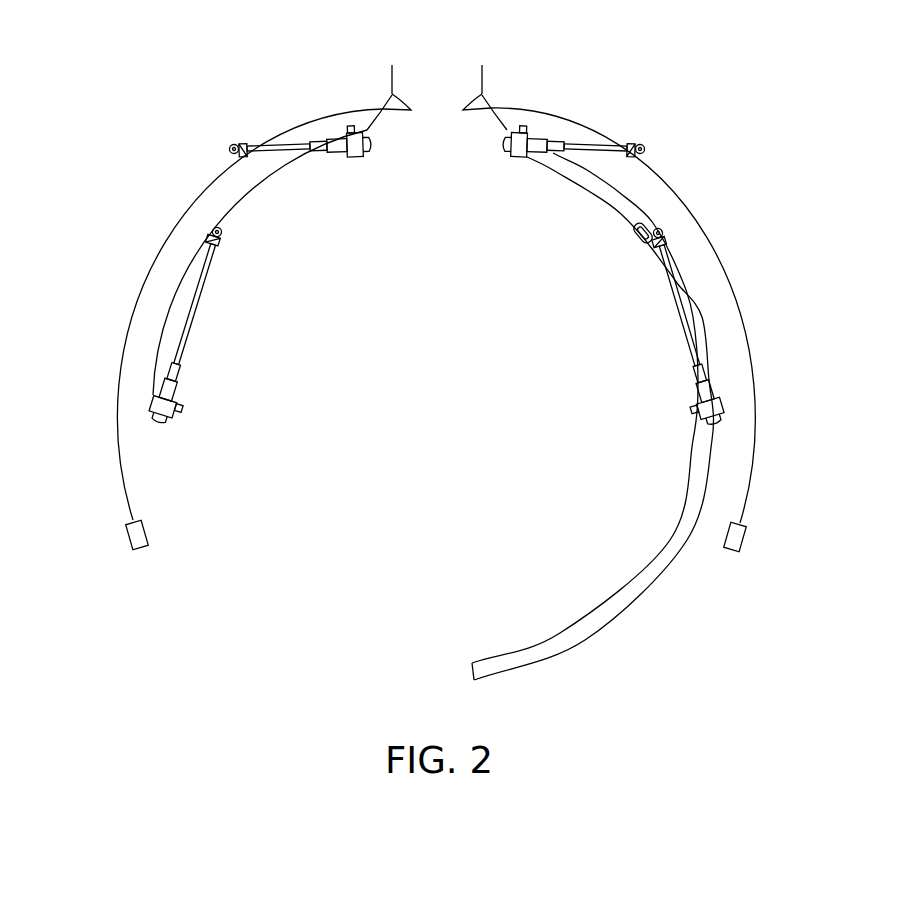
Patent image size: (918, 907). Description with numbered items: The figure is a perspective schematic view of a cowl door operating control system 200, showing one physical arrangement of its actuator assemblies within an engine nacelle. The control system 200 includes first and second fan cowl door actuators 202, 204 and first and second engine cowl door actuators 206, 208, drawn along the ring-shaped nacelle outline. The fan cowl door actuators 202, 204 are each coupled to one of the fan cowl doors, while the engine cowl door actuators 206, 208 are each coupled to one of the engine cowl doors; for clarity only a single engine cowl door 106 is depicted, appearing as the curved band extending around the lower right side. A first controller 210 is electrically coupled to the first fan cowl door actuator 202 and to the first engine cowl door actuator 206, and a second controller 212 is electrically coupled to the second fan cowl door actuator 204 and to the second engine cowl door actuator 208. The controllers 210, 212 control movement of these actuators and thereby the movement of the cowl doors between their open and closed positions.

The cowl door operating control system 200 is at (144, 118).
The engine cowl door 106 is at (623, 610).
The first fan cowl door actuator 202 is at (362, 160).
The second fan cowl door actuator 204 is at (500, 160).
The first engine cowl door actuator 206 is at (190, 337).
The second engine cowl door actuator 208 is at (692, 414).
The first controller 210 is at (147, 531).
The second controller 212 is at (746, 537).